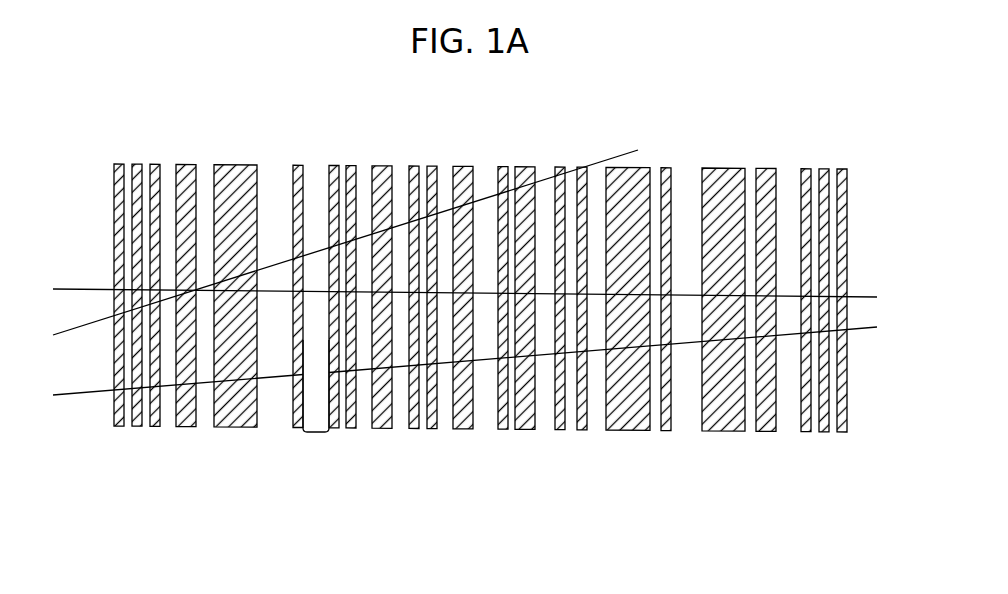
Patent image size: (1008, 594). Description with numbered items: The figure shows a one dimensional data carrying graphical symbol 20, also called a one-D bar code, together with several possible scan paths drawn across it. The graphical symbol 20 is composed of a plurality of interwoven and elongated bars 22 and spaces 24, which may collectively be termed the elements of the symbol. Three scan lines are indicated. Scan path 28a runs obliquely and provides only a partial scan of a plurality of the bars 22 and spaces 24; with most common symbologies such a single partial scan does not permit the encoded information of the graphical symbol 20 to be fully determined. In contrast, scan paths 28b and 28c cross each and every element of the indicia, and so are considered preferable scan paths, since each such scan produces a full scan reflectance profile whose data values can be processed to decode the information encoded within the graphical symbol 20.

The graphical symbol 20 is at (480, 348).
The bars 22 is at (523, 431).
The spaces 24 is at (313, 432).
The scan path 28a is at (615, 156).
The scan path 28b is at (867, 297).
The scan path 28c is at (88, 394).